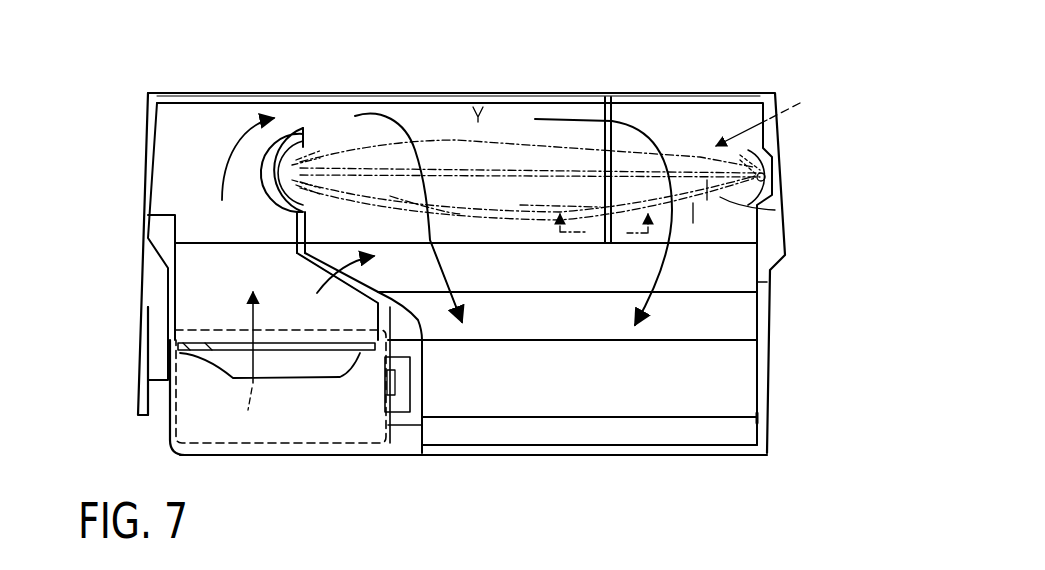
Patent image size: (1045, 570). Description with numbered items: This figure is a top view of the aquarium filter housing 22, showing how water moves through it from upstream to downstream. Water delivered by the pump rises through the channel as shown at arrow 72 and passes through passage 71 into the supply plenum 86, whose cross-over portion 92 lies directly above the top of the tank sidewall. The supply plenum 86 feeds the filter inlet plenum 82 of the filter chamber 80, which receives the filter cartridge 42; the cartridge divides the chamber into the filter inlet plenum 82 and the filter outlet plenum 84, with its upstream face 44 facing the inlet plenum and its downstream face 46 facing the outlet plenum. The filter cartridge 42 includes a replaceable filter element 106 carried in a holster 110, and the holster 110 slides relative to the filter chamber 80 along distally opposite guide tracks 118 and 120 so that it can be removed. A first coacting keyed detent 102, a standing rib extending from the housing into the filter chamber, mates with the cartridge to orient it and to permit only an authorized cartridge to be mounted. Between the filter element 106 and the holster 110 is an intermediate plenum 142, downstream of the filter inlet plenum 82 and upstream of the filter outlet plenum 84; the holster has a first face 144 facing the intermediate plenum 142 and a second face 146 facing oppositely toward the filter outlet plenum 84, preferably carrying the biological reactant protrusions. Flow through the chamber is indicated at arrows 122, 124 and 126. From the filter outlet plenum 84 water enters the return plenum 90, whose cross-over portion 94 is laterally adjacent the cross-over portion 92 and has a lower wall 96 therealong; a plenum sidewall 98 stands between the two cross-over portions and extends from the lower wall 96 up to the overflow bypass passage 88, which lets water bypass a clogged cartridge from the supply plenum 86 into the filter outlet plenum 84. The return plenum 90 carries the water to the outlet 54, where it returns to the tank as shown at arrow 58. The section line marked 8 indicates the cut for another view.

The housing 22 is at (150, 96).
The arrow 122 is at (257, 90).
The guide track 118 is at (308, 150).
The arrow 124 is at (392, 90).
The filter chamber 80 is at (488, 90).
The first coacting keyed detent 102 is at (632, 100).
The filter cartridge 42 is at (772, 119).
The replaceable filter element 106 is at (757, 160).
The guide track 120 is at (768, 178).
The holster 110 is at (775, 210).
The filter inlet plenum 82 is at (367, 143).
The filter outlet plenum 84 is at (348, 231).
The upstream face 44 is at (447, 130).
The downstream face 46 is at (392, 218).
The intermediate plenum 142 is at (575, 194).
The section line 8- 8 is at (602, 229).
The first face 144 is at (707, 200).
The second face 146 is at (693, 223).
The supply plenum 86 is at (248, 281).
The overflow bypass passage 88 is at (320, 272).
The cross-over portion 92 is at (188, 284).
The arrow 72 is at (245, 312).
The passage 71 is at (282, 342).
The plenum sidewall 98 is at (365, 282).
The arrow 126 is at (445, 276).
The return plenum 90 is at (633, 280).
The lower wall 96 is at (674, 288).
The cross-over portion 94 is at (748, 283).
The arrow 58 is at (582, 486).
The outlet 54 is at (700, 430).